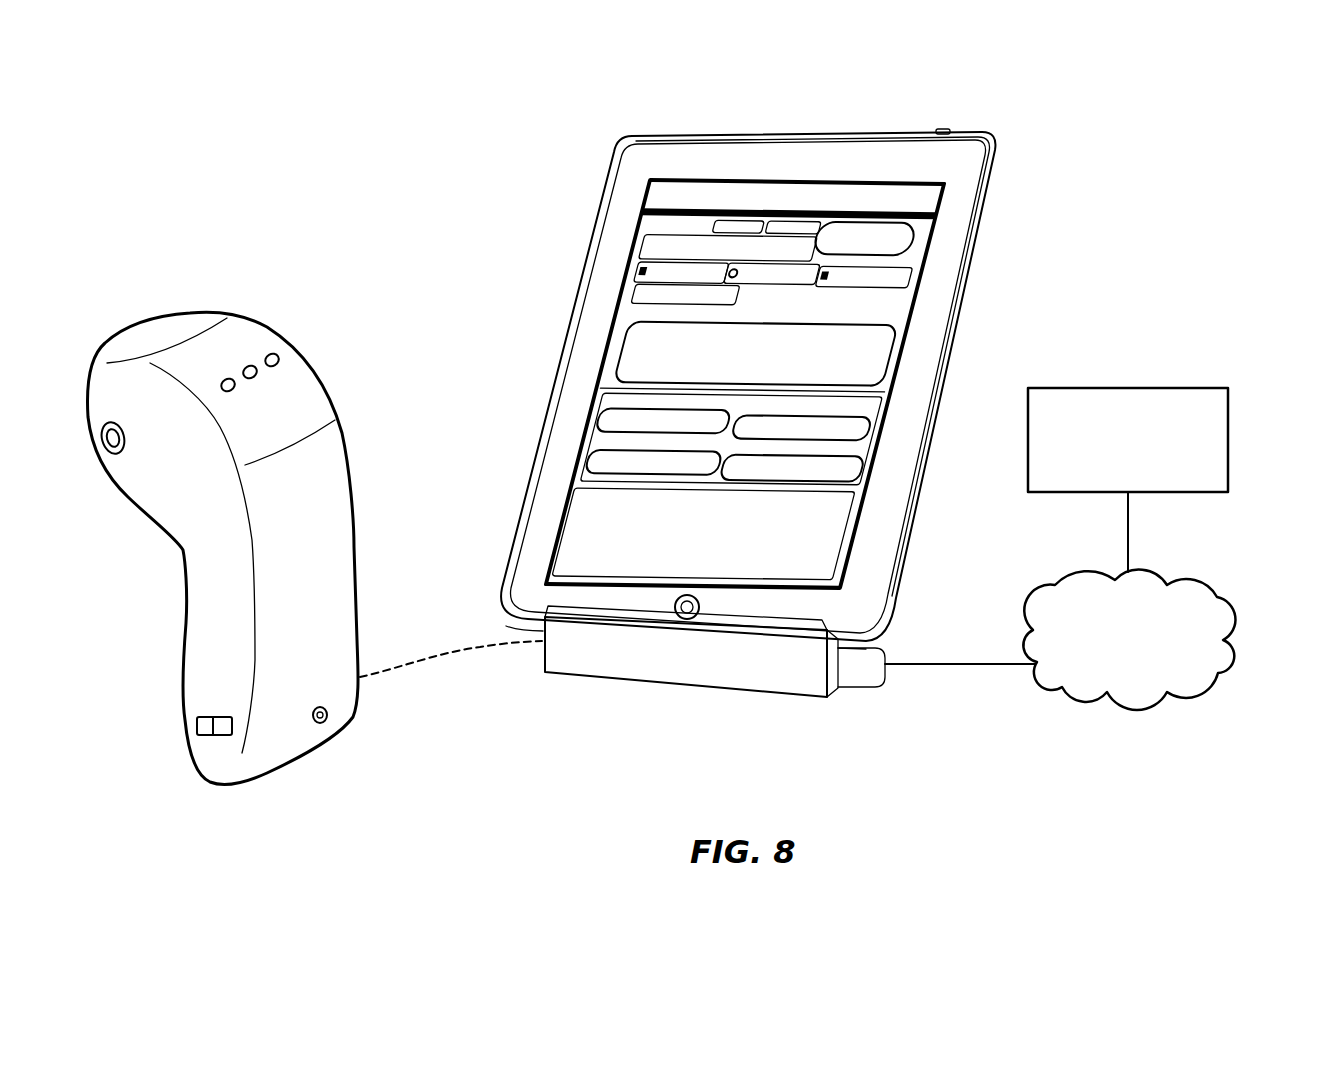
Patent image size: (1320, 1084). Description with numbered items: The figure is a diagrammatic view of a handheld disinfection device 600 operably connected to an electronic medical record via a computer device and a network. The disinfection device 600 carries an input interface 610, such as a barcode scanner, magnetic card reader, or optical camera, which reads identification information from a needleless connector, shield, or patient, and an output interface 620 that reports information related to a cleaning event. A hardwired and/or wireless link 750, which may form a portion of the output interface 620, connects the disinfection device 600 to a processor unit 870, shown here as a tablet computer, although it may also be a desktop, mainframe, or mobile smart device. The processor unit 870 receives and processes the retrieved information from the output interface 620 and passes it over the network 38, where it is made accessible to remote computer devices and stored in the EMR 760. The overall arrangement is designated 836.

The tablet computing device 836 is at (698, 366).
The handheld barcode scanner 600 is at (318, 327).
The scanner trigger button 610 is at (328, 720).
The scanner power switch 620 is at (203, 730).
The connection cable 750 is at (430, 658).
The tablet housing 870 is at (518, 543).
The EMR system 760 is at (1195, 438).
The network 38 is at (1197, 597).